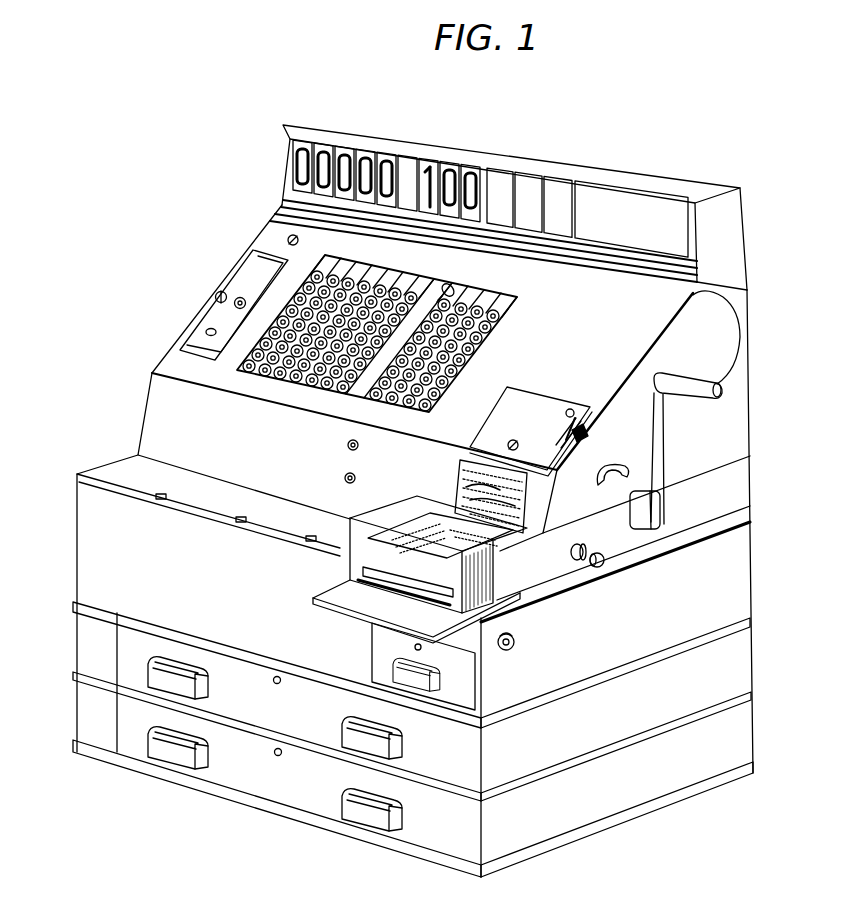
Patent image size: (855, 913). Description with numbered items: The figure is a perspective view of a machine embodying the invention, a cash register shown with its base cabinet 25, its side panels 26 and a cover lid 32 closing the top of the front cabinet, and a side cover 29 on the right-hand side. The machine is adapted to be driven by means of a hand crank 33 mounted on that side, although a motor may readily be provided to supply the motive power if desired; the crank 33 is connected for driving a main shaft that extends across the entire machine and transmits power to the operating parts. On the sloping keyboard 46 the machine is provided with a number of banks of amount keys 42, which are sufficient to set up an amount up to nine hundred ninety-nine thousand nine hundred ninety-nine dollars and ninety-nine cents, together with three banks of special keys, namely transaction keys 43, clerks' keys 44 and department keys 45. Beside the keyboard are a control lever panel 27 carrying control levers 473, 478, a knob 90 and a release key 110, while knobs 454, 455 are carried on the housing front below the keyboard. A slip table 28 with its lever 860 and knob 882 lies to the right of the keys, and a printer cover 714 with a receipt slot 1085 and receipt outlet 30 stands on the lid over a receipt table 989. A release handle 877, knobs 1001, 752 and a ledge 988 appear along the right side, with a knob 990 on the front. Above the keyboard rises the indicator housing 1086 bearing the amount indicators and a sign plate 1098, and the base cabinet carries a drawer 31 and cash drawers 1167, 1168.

The base cabinet 25 is at (745, 663).
The side panel 26 is at (742, 247).
The control lever panel 27 is at (233, 304).
The slip table 28 is at (505, 398).
The side cover 29 is at (715, 485).
The receipt outlet 30 is at (352, 584).
The drawer 31 is at (423, 666).
The cover lid 32 is at (92, 462).
The hand crank 33 is at (664, 428).
The amount keys 42 is at (290, 372).
The transaction keys 43 is at (385, 410).
The clerks' keys 44 is at (400, 406).
The department keys 45 is at (500, 310).
The keyboard 46 is at (363, 270).
The control knob 90 is at (290, 236).
The release key 110 is at (446, 283).
The knob 454 is at (348, 444).
The knob 455 is at (345, 476).
The control lever 473 is at (206, 331).
The control lever 478 is at (216, 294).
The printer cover 714 is at (370, 505).
The knob 752 is at (600, 566).
The slip table lever 860 is at (568, 410).
The release handle 877 is at (599, 482).
The knob 882 is at (512, 442).
The ledge 988 is at (540, 598).
The receipt table 989 is at (358, 612).
The knob 990 is at (510, 652).
The knob 1001 is at (571, 550).
The receipt slot 1085 is at (363, 572).
The indicator housing 1086 is at (290, 133).
The sign plate 1098 is at (653, 207).
The cash drawer 1167 is at (275, 708).
The cash drawer 1168 is at (275, 779).